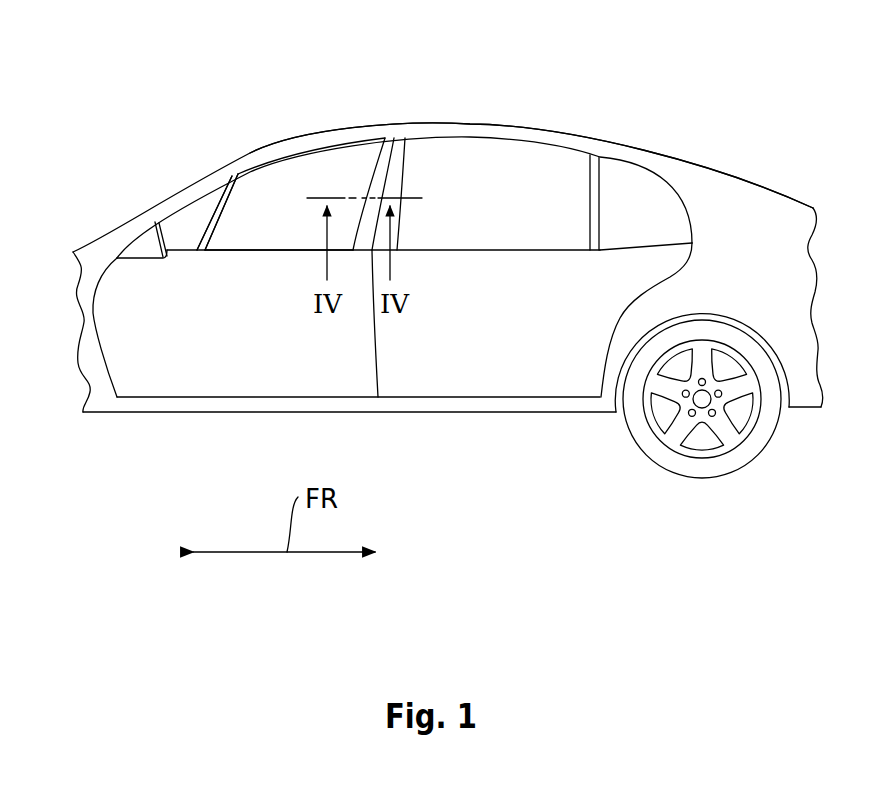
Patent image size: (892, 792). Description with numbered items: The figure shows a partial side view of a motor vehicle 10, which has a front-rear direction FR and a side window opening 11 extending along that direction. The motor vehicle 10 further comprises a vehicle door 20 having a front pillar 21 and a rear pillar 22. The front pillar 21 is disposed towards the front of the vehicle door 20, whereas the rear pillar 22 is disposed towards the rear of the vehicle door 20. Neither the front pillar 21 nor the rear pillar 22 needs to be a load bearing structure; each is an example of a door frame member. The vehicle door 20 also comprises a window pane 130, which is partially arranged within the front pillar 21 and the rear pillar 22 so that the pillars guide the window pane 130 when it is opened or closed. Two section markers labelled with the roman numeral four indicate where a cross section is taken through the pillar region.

The motor vehicle 10 is at (158, 104).
The side window opening 11 is at (347, 135).
The vehicle door 20 is at (240, 361).
The front pillar 21 is at (234, 168).
The rear pillar 22 is at (381, 160).
The window pane 130 is at (292, 178).